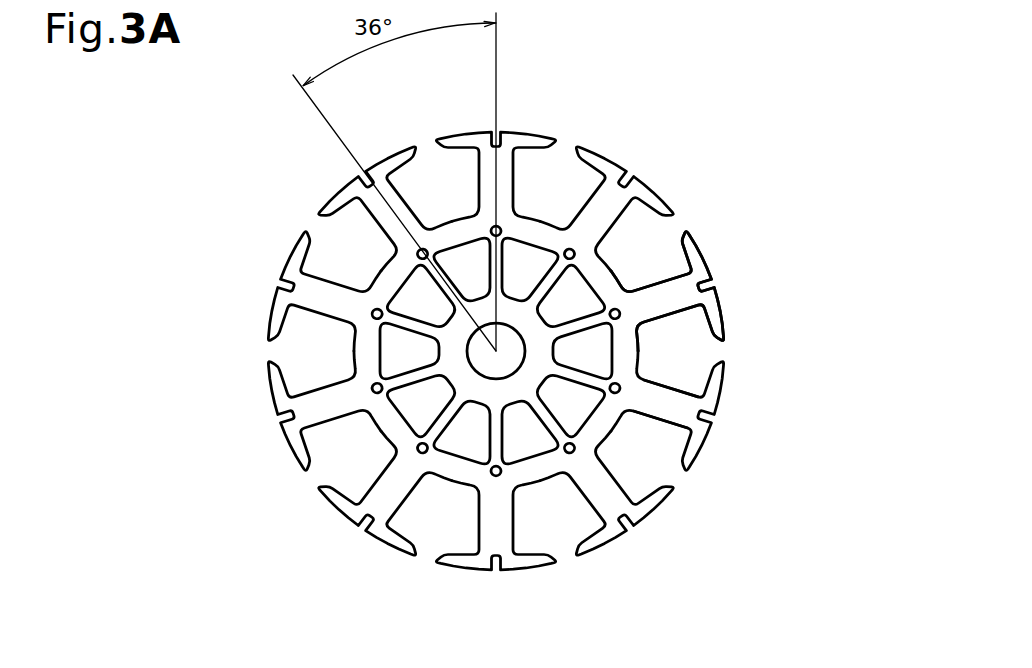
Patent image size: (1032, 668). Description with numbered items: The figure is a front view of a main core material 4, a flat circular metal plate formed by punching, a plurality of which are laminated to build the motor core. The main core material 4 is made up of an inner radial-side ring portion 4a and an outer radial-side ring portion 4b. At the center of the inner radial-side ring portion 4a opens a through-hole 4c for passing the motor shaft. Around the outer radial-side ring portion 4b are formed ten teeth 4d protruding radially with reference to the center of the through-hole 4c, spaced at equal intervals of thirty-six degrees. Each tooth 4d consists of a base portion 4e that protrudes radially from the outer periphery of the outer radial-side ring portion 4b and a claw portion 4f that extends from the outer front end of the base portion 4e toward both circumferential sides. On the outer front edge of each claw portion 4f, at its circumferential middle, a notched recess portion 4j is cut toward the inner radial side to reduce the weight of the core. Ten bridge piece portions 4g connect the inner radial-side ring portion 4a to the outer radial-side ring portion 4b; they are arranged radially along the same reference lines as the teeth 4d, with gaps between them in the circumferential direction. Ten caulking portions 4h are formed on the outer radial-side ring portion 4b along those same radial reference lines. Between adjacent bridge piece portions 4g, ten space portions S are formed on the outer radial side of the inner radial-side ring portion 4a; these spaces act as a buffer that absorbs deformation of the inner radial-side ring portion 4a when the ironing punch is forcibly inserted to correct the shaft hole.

The main core material 4 is at (693, 140).
The inner radial-side ring portion 4a is at (588, 357).
The outer radial-side ring portion 4b is at (668, 297).
The through-hole 4c is at (496, 351).
The tooth 4d is at (668, 405).
The base portion 4e is at (665, 404).
The claw portion 4f is at (583, 248).
The bridge piece portion 4g is at (485, 351).
The caulking portion 4h is at (496, 351).
The notched recess portion 4j is at (602, 350).
The space portion S is at (574, 304).